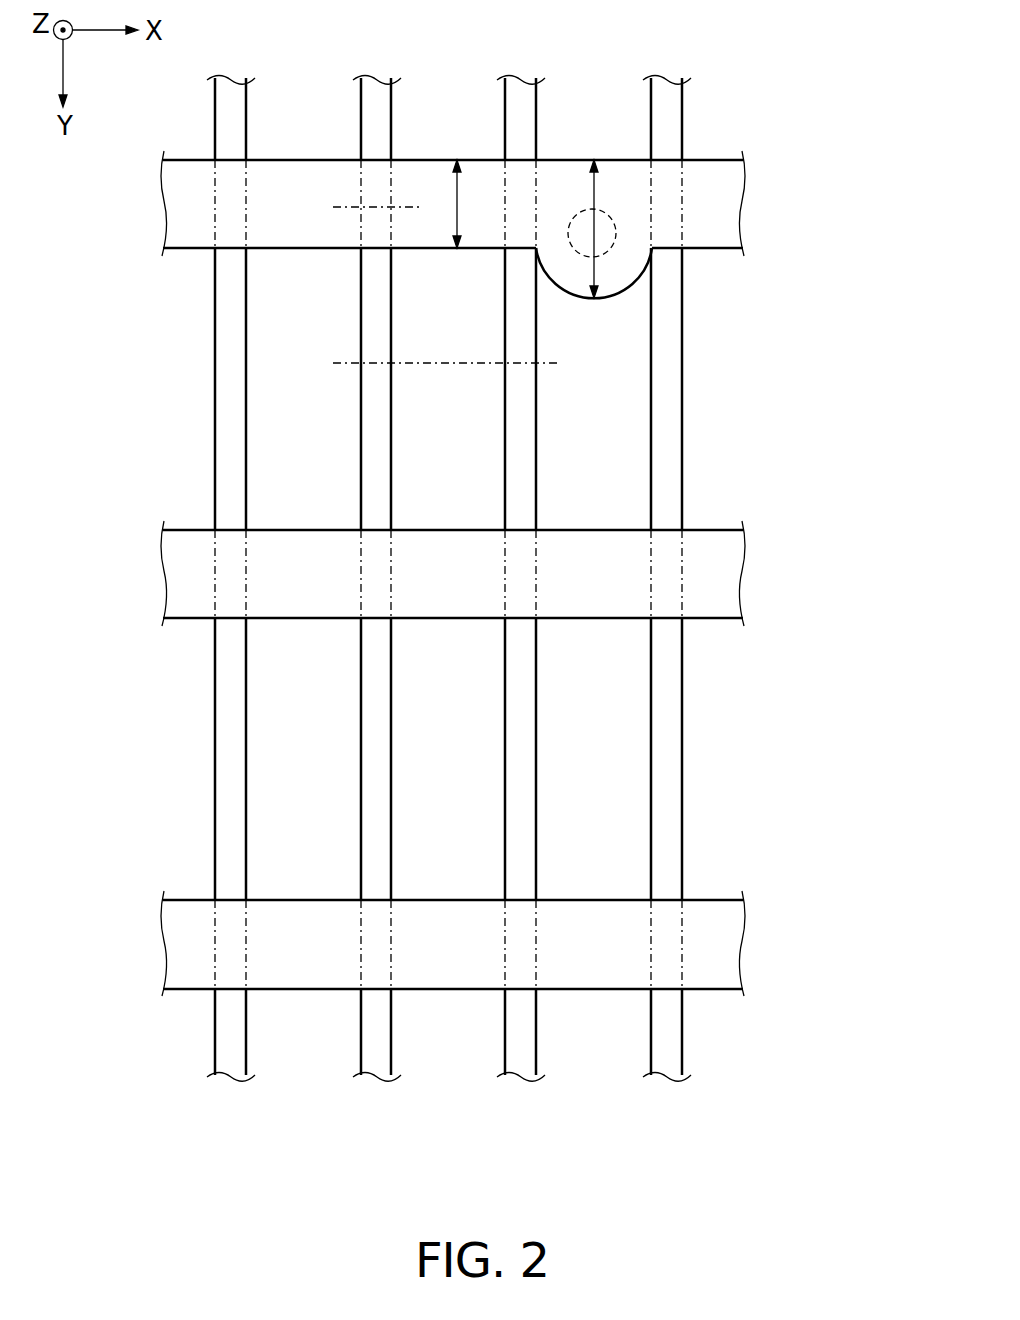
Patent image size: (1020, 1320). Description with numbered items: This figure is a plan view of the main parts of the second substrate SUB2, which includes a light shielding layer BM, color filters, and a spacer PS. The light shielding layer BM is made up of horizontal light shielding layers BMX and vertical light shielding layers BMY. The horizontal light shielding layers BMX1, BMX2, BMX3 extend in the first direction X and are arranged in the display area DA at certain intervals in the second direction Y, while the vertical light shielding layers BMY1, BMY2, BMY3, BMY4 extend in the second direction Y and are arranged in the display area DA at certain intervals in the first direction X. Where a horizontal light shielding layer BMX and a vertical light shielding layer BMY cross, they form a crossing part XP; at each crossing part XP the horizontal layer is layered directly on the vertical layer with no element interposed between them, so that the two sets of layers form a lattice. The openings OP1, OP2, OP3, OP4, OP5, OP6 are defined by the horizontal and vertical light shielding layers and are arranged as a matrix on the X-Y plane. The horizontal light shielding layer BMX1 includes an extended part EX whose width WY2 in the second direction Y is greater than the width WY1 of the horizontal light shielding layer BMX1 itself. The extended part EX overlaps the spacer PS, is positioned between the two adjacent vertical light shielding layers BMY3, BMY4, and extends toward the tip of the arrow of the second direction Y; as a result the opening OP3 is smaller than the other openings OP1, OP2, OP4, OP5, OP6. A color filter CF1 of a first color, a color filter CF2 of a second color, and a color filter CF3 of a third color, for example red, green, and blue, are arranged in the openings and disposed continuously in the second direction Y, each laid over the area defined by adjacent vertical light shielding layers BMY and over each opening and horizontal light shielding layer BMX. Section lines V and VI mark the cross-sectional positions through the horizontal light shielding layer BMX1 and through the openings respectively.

The second substrate SUB2 is at (790, 90).
The display area DA is at (800, 174).
The light shielding layer BM is at (484, 620).
The horizontal light shielding layer BMX is at (527, 573).
The horizontal light shielding layer BMX1 is at (731, 212).
The horizontal light shielding layer BMX2 is at (731, 587).
The horizontal light shielding layer BMX3 is at (731, 943).
The vertical light shielding layer BMY is at (445, 620).
The vertical light shielding layer BMY1 is at (230, 1060).
The vertical light shielding layer BMY2 is at (377, 1060).
The vertical light shielding layer BMY3 is at (522, 1063).
The vertical light shielding layer BMY4 is at (665, 1067).
The crossing part XP is at (235, 197).
The extended part EX is at (612, 288).
The spacer PS is at (617, 237).
The width of horizontal light shielding layer WY1 is at (460, 192).
The width of extended part WY2 is at (595, 193).
The section line V- V is at (339, 219).
The section line VI- VI is at (339, 375).
The color filter CF1 is at (294, 577).
The color filter CF2 is at (447, 577).
The color filter CF3 is at (599, 577).
The opening OP1 is at (233, 436).
The opening OP2 is at (517, 484).
The opening OP3 is at (663, 389).
The opening OP4 is at (233, 765).
The opening OP5 is at (517, 698).
The opening OP6 is at (663, 755).